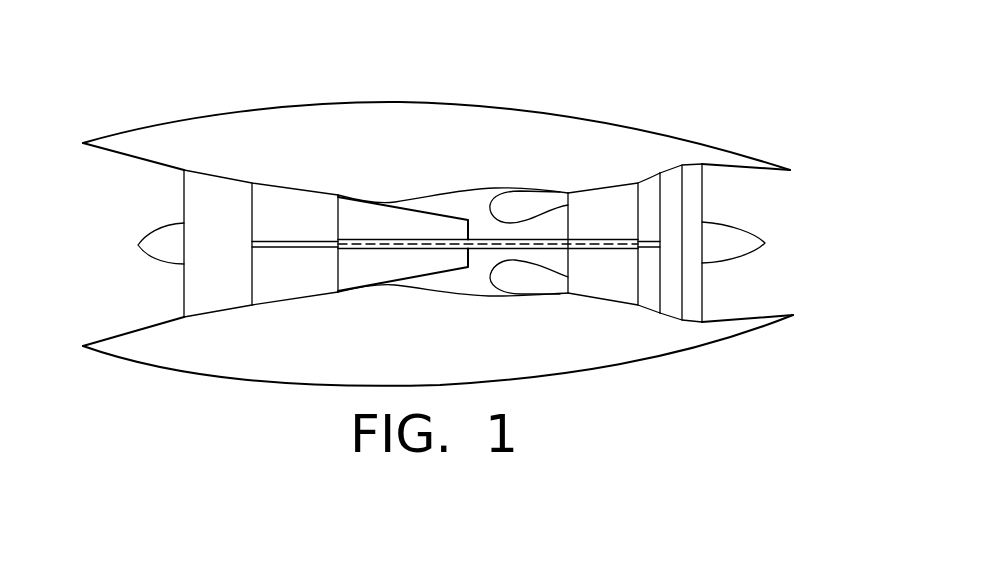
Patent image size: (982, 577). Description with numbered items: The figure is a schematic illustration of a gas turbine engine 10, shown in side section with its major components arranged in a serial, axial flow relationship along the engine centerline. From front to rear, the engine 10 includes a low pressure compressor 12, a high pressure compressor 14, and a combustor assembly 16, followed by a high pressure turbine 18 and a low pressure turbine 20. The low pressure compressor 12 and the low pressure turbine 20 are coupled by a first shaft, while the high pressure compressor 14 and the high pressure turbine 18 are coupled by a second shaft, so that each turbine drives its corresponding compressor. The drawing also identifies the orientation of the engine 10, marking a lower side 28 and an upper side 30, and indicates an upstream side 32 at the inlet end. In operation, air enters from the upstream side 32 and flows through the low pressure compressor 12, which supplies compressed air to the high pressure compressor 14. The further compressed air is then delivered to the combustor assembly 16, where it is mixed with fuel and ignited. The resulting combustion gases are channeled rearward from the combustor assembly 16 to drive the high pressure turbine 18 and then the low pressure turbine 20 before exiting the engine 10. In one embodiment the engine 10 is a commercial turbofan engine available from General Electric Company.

The gas turbine engine 10 is at (543, 63).
The low pressure compressor 12 is at (214, 183).
The high pressure compressor 14 is at (402, 268).
The combustor assembly 16 is at (533, 285).
The high pressure turbine 18 is at (600, 203).
The low pressure turbine 20 is at (668, 183).
The lower side 28 is at (783, 348).
The upper side 30 is at (777, 110).
The upstream side 32 is at (49, 330).